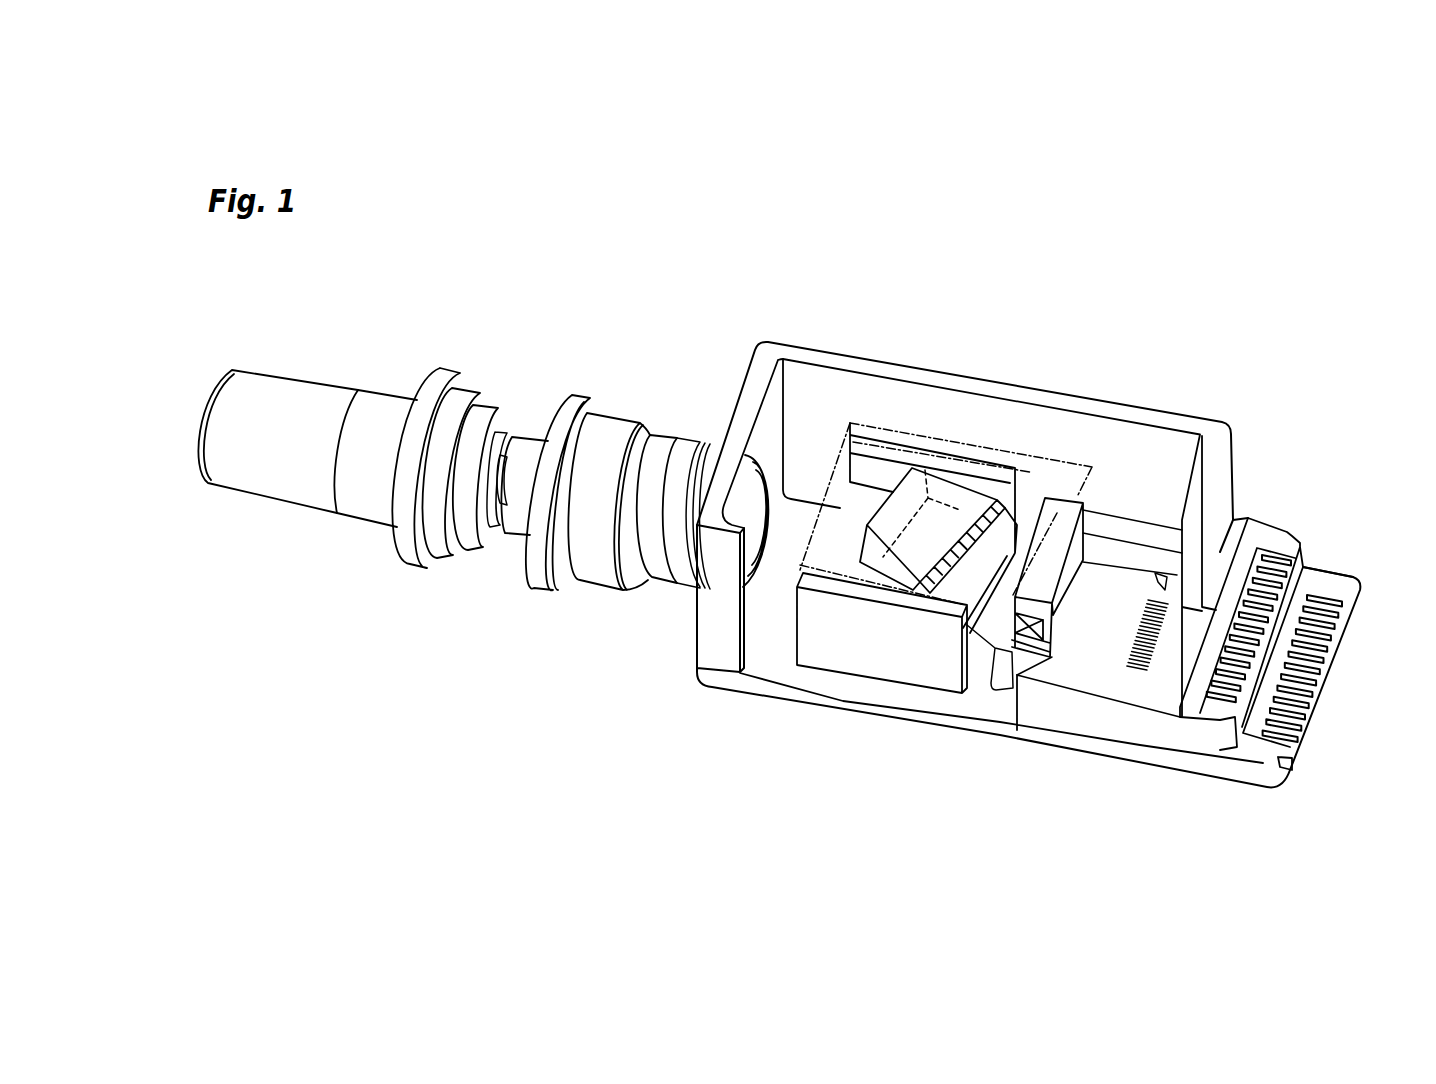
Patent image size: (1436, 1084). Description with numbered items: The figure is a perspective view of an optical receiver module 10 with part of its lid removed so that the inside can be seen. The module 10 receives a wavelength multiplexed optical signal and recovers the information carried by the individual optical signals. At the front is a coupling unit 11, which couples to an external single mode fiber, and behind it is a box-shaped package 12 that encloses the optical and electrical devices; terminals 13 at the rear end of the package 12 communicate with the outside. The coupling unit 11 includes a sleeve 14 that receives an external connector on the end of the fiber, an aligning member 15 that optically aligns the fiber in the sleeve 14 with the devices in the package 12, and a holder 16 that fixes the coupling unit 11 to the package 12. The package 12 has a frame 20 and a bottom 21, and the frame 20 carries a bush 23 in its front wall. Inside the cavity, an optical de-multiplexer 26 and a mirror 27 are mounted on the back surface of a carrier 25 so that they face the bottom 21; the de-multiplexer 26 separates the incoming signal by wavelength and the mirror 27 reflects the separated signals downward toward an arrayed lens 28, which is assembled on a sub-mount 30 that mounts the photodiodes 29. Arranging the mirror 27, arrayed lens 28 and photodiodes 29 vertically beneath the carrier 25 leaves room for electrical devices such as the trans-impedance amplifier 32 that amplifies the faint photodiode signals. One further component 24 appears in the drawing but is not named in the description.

The optical receiver module 10 is at (636, 703).
The coupling unit 11 is at (233, 303).
The package 12 is at (762, 296).
The terminals 13 is at (1280, 537).
The sleeve 14 is at (302, 478).
The aligning member 15 is at (580, 573).
The holder 16 is at (640, 570).
The frame 20 is at (1208, 463).
The bottom 21 is at (853, 703).
The bush 23 is at (769, 465).
The front block 24 is at (807, 620).
The carrier 25 is at (940, 440).
The optical de-multiplexer 26 is at (875, 577).
The mirror 27 is at (1052, 515).
The arrayed lens 28 is at (967, 620).
The photodiodes 29 is at (993, 647).
The sub-mount 30 is at (1010, 683).
The trans-impedance amplifier 32 is at (1098, 640).